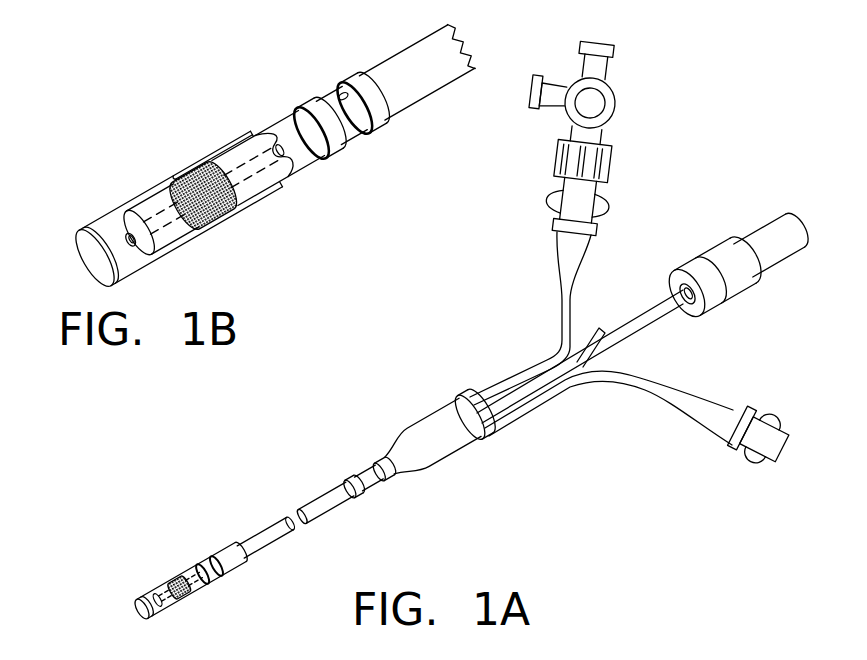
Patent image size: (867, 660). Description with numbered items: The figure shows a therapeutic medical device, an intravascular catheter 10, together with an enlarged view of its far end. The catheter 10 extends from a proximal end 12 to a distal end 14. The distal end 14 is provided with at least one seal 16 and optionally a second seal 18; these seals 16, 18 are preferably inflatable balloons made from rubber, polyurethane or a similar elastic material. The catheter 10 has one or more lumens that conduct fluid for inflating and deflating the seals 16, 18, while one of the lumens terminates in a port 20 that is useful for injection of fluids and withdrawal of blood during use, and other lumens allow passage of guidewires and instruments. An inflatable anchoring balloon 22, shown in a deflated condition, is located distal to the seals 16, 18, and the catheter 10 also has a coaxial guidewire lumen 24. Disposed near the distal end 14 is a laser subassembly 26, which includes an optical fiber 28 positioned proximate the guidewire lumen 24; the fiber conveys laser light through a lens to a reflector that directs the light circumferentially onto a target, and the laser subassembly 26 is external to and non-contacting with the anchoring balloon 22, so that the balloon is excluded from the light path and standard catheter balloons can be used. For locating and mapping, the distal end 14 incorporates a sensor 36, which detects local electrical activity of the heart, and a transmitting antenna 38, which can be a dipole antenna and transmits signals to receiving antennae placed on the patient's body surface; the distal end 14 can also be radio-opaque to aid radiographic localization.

In FIG. 1A, the intravascular catheter 10 is at (435, 355).
In FIG. 1A, the proximal end 12 is at (653, 337).
In FIG. 1A, the distal end 14 is at (138, 600).
In FIG. 1B, the seal 16 is at (252, 187).
In FIG. 1B, the second seal 18 is at (412, 57).
In FIG. 1B, the port 20 is at (352, 88).
In FIG. 1B, the inflatable anchoring balloon 22 is at (148, 253).
In FIG. 1B, the coaxial guidewire lumen 24 is at (120, 232).
In FIG. 1B, the laser subassembly 26 is at (44, 238).
In FIG. 1B, the optical fiber 28 is at (229, 136).
In FIG. 1B, the sensor 36 is at (193, 164).
In FIG. 1B, the transmitting antenna 38 is at (306, 106).